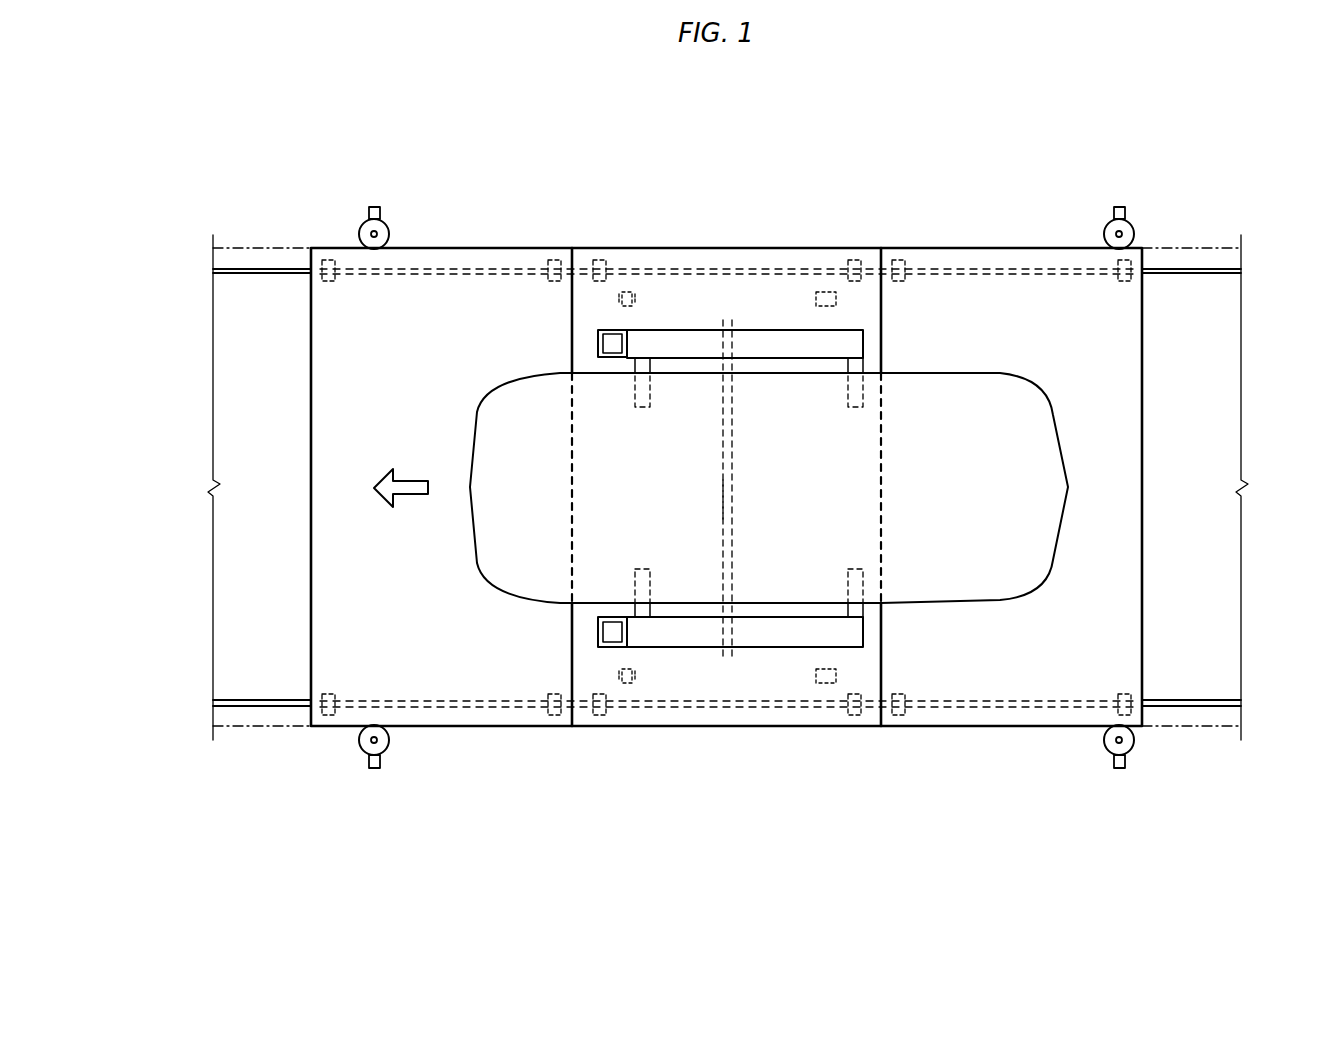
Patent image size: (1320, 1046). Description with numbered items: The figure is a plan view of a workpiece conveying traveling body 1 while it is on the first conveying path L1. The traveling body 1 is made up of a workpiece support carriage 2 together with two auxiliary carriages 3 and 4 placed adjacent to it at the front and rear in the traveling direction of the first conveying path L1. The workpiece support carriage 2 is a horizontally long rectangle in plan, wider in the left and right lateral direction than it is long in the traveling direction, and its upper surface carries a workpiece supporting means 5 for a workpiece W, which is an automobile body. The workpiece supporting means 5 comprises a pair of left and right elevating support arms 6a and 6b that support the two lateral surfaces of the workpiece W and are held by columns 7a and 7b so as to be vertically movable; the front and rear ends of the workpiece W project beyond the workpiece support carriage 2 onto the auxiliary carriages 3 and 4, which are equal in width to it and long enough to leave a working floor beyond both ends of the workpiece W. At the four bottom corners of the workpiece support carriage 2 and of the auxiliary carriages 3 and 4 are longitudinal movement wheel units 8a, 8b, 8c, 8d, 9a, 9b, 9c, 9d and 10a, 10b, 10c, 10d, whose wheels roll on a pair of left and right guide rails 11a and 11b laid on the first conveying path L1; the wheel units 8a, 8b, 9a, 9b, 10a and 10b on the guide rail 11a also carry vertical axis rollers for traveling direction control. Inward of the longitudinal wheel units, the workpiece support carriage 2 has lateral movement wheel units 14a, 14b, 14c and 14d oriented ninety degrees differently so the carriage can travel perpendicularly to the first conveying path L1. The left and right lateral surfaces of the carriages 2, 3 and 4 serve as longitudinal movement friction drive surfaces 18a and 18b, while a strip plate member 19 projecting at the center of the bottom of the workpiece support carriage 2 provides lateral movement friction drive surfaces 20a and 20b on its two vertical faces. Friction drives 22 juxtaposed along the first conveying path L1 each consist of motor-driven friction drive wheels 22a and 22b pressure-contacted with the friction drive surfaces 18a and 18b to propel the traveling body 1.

The workpiece conveying traveling body 1 is at (742, 246).
The workpiece support carriage 2 is at (687, 686).
The auxiliary carriage 3 is at (445, 294).
The auxiliary carriage 4 is at (1005, 294).
The workpiece supporting means 5 is at (760, 650).
The elevating support arm 6a is at (790, 630).
The elevating support arm 6b is at (778, 346).
The column 7a is at (612, 632).
The column 7b is at (612, 343).
The longitudinal movement wheel unit 8a is at (600, 718).
The longitudinal movement wheel unit 8b is at (855, 718).
The longitudinal movement wheel unit 8c is at (600, 256).
The longitudinal movement wheel unit 8d is at (855, 256).
The longitudinal movement wheel unit 9a is at (328, 718).
The longitudinal movement wheel unit 9b is at (555, 718).
The longitudinal movement wheel unit 9c is at (329, 284).
The longitudinal movement wheel unit 9d is at (553, 256).
The longitudinal movement wheel unit 10a is at (900, 718).
The longitudinal movement wheel unit 10b is at (1125, 690).
The longitudinal movement wheel unit 10c is at (898, 284).
The longitudinal movement wheel unit 10d is at (1125, 284).
The guide rail 11a is at (240, 703).
The guide rail 11b is at (283, 270).
The lateral movement wheel unit 14a is at (617, 298).
The lateral movement wheel unit 14b is at (617, 676).
The lateral movement wheel unit 14c is at (821, 288).
The lateral movement wheel unit 14d is at (840, 676).
The longitudinal movement friction drive surface 18a is at (445, 726).
The longitudinal movement friction drive surface 18b is at (478, 248).
The strip plate member 19 is at (727, 472).
The lateral movement friction drive surface 20a is at (720, 515).
The lateral movement friction drive surface 20b is at (735, 503).
The friction drive 22 is at (1133, 220).
The friction drive wheel 22a is at (374, 726).
The friction drive wheel 22b is at (364, 223).
The workpiece W is at (1068, 511).
The first conveying path L1 is at (237, 394).